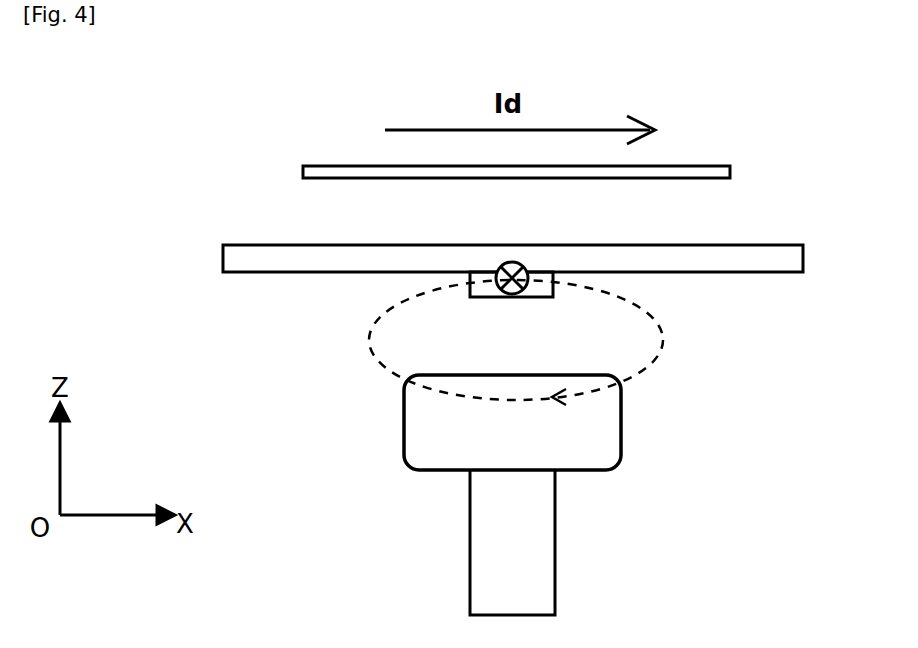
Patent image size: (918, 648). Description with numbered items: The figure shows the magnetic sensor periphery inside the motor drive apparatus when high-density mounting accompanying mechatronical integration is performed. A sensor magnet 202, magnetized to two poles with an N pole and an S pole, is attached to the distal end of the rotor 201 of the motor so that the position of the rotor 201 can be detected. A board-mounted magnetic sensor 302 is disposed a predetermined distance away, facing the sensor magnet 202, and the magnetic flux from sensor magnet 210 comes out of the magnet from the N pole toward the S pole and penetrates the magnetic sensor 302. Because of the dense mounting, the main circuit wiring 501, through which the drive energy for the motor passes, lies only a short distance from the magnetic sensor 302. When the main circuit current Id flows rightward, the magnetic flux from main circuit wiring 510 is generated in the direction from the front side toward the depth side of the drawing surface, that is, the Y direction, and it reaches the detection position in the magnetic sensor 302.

The main circuit wiring 501 is at (332, 166).
The magnetic flux from main circuit wiring 510 is at (470, 282).
The magnetic sensor 302 is at (540, 287).
The magnetic flux from sensor magnet 210 is at (363, 350).
The sensor magnet 202 is at (418, 428).
The rotor 201 is at (470, 552).